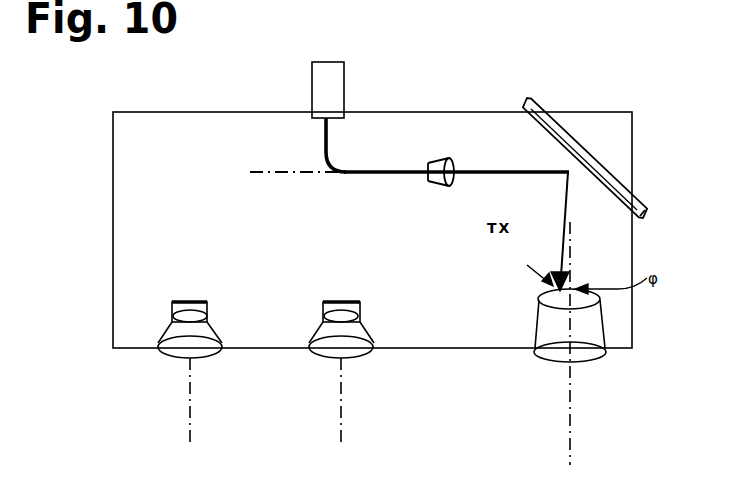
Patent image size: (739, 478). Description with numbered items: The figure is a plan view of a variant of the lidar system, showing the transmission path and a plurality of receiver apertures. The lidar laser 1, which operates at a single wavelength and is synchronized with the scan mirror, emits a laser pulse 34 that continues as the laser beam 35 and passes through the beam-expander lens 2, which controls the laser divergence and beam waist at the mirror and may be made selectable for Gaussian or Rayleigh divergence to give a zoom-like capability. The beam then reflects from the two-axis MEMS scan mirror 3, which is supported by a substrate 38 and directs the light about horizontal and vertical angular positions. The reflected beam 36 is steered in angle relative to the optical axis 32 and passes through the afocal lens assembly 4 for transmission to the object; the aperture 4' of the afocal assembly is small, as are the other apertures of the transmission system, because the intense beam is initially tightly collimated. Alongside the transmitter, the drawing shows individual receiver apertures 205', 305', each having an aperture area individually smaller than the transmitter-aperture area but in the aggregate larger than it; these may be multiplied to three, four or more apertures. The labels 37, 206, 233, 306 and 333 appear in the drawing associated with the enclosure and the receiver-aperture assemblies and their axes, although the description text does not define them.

The lidar laser 1 is at (320, 89).
The beam-expander lens 2 is at (440, 180).
The MEMS scan mirror 3 is at (568, 164).
The afocal lens assembly 4 is at (564, 325).
The aperture of the afocal assembly 4' is at (627, 380).
The optical axis 32 is at (584, 343).
The laser pulse 34 is at (340, 145).
The laser beam 35 is at (409, 170).
The deflected beam 36 is at (548, 231).
The housing 37 is at (372, 231).
The substrate 38 is at (655, 217).
The receiver aperture 205' is at (228, 359).
The second light source 206 is at (190, 300).
The second optical axis 233 is at (210, 410).
The receiver aperture 305' is at (376, 359).
The third light source 306 is at (338, 300).
The third optical axis 333 is at (361, 412).